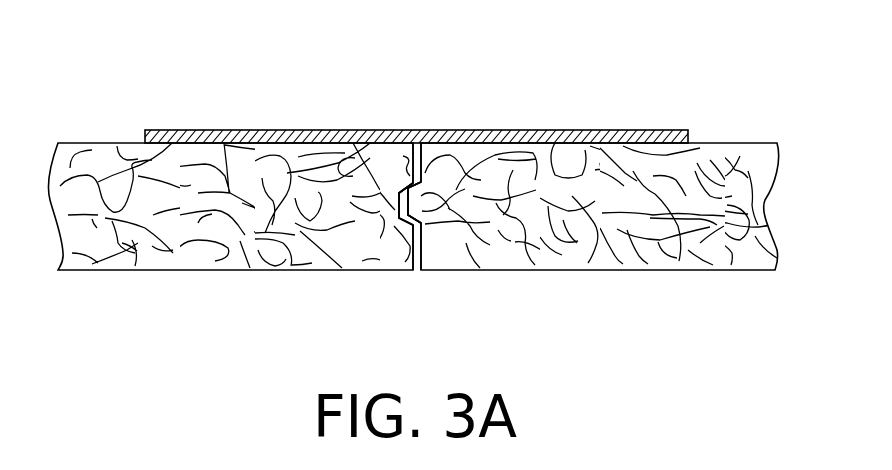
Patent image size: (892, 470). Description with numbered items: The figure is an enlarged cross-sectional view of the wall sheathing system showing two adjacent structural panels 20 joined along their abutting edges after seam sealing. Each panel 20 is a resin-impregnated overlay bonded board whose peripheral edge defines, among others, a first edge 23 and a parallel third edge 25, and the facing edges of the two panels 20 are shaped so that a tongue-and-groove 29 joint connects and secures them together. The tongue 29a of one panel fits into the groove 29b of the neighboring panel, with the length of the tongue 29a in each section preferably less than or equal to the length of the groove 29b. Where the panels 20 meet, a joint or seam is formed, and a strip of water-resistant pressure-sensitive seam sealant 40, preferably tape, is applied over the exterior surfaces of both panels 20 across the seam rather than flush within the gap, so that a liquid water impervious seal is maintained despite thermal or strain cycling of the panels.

The structural panel 20 is at (113, 141).
The first edge 23 is at (413, 271).
The third edge 25 is at (430, 271).
The tongue-and-groove 29 is at (440, 205).
The tongue 29a is at (425, 198).
The groove 29b is at (347, 143).
The seam sealant 40 is at (503, 130).